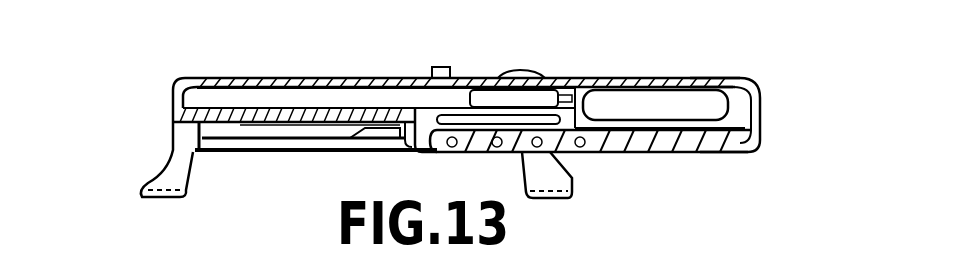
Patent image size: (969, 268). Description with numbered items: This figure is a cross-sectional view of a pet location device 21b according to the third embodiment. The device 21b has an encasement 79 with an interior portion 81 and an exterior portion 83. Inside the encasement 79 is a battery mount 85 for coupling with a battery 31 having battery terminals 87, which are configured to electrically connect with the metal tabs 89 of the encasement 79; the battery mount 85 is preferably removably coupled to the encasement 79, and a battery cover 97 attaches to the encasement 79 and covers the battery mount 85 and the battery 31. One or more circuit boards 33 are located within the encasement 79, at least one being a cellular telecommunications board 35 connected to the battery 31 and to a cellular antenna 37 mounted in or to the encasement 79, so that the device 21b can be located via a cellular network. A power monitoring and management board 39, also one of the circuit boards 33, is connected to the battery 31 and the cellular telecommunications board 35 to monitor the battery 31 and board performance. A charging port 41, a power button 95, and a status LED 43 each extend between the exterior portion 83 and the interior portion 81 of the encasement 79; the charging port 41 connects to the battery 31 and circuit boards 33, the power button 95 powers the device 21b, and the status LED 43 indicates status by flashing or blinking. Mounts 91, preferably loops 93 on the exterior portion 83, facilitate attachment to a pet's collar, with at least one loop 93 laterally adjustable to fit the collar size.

The pet location device 21b is at (147, 72).
The battery 31 is at (247, 130).
The circuit boards 33 is at (260, 98).
The cellular telecommunications board 35 is at (497, 80).
The cellular antenna 37 is at (650, 102).
The power monitoring and management board 39 is at (517, 142).
The charging port 41 is at (438, 130).
The status LED 43 is at (438, 68).
The encasement 79 is at (737, 85).
The interior portion 81 is at (700, 80).
The exterior portion 83 is at (760, 105).
The battery mount 85 is at (313, 138).
The battery terminals 87 is at (363, 140).
The metal tabs 89 is at (413, 152).
The mounts 91 is at (162, 200).
The loops 93 is at (150, 178).
The power button 95 is at (518, 72).
The battery cover 97 is at (215, 152).